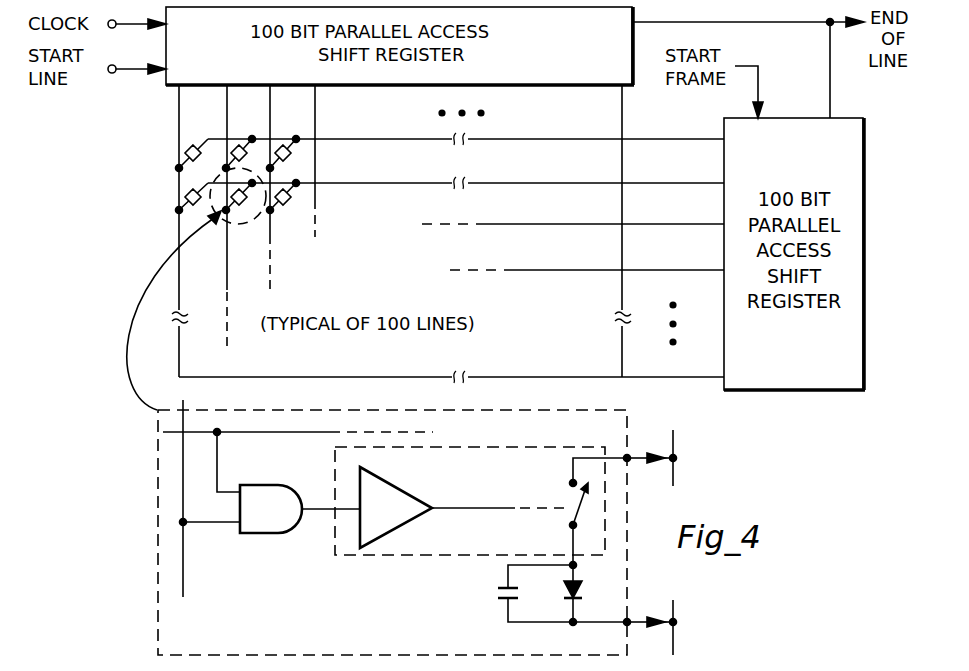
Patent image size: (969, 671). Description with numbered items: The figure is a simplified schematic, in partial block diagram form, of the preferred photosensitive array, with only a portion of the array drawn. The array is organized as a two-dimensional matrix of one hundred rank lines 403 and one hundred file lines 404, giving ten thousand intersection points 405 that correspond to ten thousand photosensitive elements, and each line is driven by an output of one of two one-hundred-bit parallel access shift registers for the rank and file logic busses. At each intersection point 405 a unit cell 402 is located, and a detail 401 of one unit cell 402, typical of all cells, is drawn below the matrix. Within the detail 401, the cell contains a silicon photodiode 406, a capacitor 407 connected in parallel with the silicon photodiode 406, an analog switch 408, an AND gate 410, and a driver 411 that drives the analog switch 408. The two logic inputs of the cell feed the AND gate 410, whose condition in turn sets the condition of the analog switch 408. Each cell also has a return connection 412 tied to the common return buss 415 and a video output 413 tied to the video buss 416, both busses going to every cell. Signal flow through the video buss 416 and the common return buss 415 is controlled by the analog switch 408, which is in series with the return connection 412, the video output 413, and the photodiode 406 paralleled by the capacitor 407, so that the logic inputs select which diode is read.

The detail 401 is at (138, 482).
The unit cell 402 is at (188, 150).
The rank lines 403 is at (179, 120).
The file lines 404 is at (634, 138).
The intersection points 405 is at (273, 119).
The silicon photodiode 406 is at (582, 590).
The capacitor 407 is at (501, 594).
The analog switch 408 is at (583, 500).
The AND gate 410 is at (266, 485).
The driver 411 is at (412, 523).
The return connection 412 is at (630, 628).
The video output 413 is at (630, 463).
The common return buss 415 is at (677, 632).
The video buss 416 is at (677, 468).